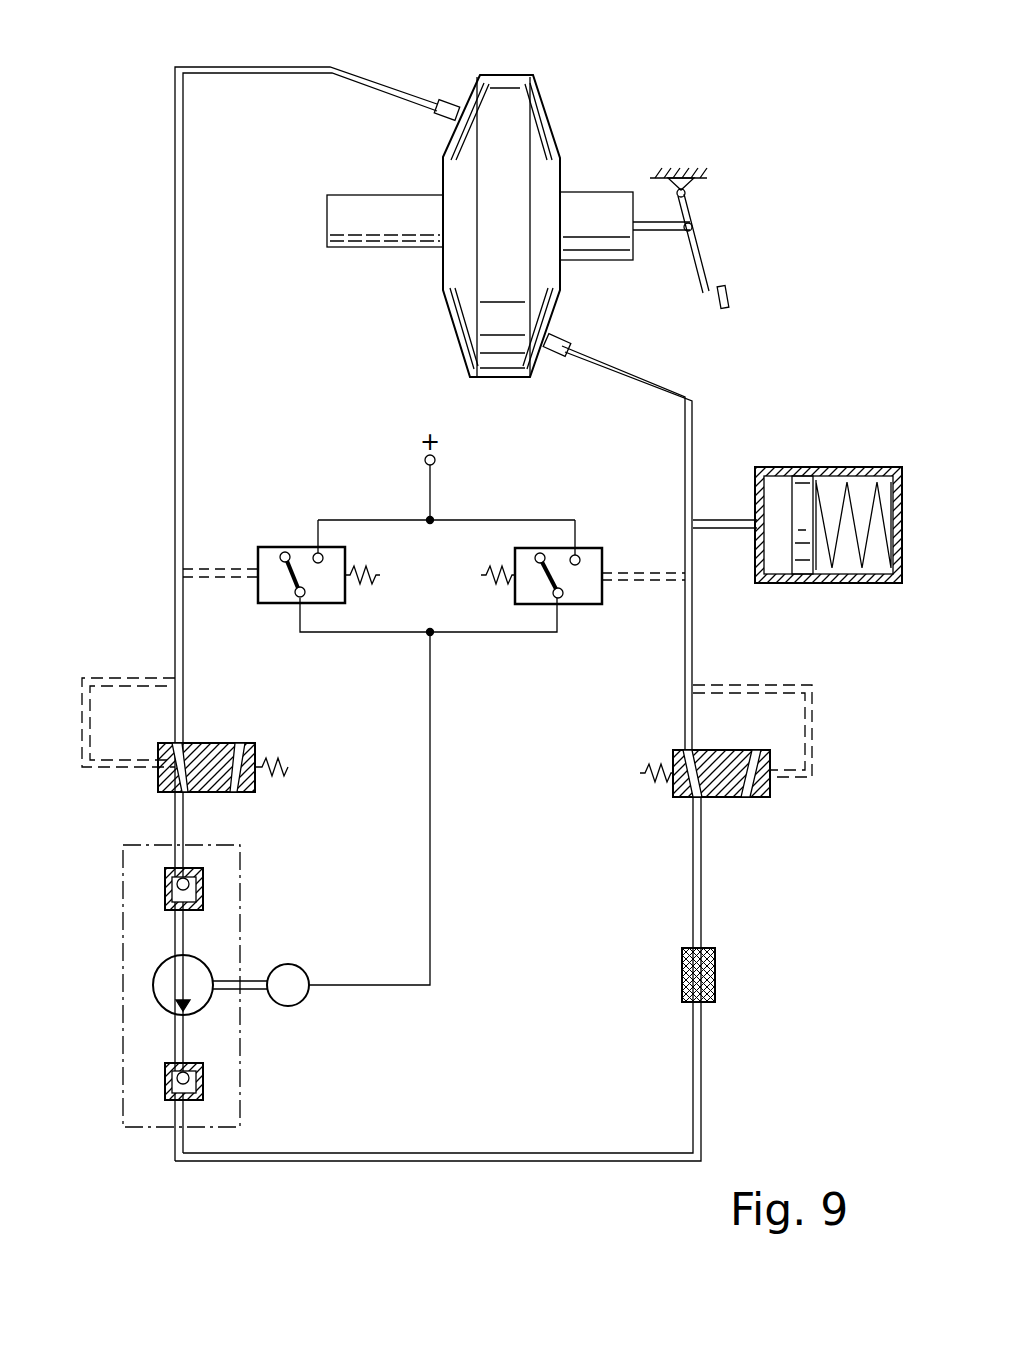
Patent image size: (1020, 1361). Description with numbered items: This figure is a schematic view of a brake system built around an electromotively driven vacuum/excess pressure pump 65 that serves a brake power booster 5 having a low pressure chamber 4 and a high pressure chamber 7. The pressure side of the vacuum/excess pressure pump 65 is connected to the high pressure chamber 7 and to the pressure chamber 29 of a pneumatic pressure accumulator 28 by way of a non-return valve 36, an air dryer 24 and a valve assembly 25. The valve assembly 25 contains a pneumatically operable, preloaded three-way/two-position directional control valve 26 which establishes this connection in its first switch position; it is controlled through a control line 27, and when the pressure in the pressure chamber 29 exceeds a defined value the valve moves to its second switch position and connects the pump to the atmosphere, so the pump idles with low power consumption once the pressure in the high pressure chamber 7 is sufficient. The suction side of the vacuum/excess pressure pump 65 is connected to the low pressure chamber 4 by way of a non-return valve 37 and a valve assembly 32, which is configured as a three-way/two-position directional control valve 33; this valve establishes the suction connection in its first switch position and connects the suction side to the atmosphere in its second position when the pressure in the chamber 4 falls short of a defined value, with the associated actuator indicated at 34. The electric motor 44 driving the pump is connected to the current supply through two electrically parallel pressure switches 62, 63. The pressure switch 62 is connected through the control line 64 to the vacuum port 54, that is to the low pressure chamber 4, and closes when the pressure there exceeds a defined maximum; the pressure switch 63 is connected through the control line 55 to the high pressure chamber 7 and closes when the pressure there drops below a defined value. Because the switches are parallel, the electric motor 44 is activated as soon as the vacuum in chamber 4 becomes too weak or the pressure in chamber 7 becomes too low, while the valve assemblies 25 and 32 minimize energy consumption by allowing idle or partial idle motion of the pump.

The low pressure chamber 4 is at (460, 180).
The brake power booster 5 is at (551, 95).
The high pressure chamber 7 is at (543, 173).
The air dryer 24 is at (717, 975).
The valve assembly 25 is at (768, 800).
The three-way/two-position directional control valve 26 is at (735, 800).
The control line 27 is at (778, 685).
The pressure accumulator 28 is at (837, 468).
The pressure chamber 29 is at (778, 492).
The valve assembly 32 is at (255, 746).
The three-way/two-position directional control valve 33 is at (205, 742).
The valve actuator 34 is at (112, 678).
The non-return valve 36 is at (165, 1085).
The non-return valve 37 is at (165, 889).
The electric motor 44 is at (283, 965).
The vacuum port 54 is at (445, 100).
The control line 55 is at (640, 582).
The pressure switch 62 is at (300, 550).
The pressure switch 63 is at (590, 552).
The control line 64 is at (228, 582).
The vacuum/excess pressure pump 65 is at (155, 995).